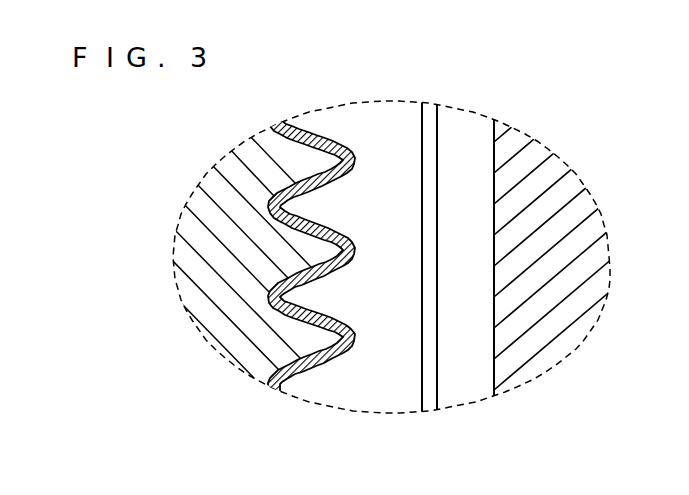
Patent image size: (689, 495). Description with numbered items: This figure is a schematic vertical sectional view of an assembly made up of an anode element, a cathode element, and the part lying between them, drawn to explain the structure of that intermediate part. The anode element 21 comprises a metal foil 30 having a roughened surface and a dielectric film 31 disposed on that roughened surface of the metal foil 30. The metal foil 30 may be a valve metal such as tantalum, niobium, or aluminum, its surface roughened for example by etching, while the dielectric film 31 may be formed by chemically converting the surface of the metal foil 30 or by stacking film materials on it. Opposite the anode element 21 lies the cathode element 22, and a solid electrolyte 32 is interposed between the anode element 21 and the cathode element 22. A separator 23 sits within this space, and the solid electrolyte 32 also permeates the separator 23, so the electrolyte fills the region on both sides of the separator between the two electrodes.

The anode element 21 is at (262, 301).
The cathode element 22 is at (533, 365).
The separator 23 is at (428, 405).
The metal foil 30 is at (230, 366).
The dielectric film 31 is at (309, 281).
The solid electrolyte 32 is at (346, 392).